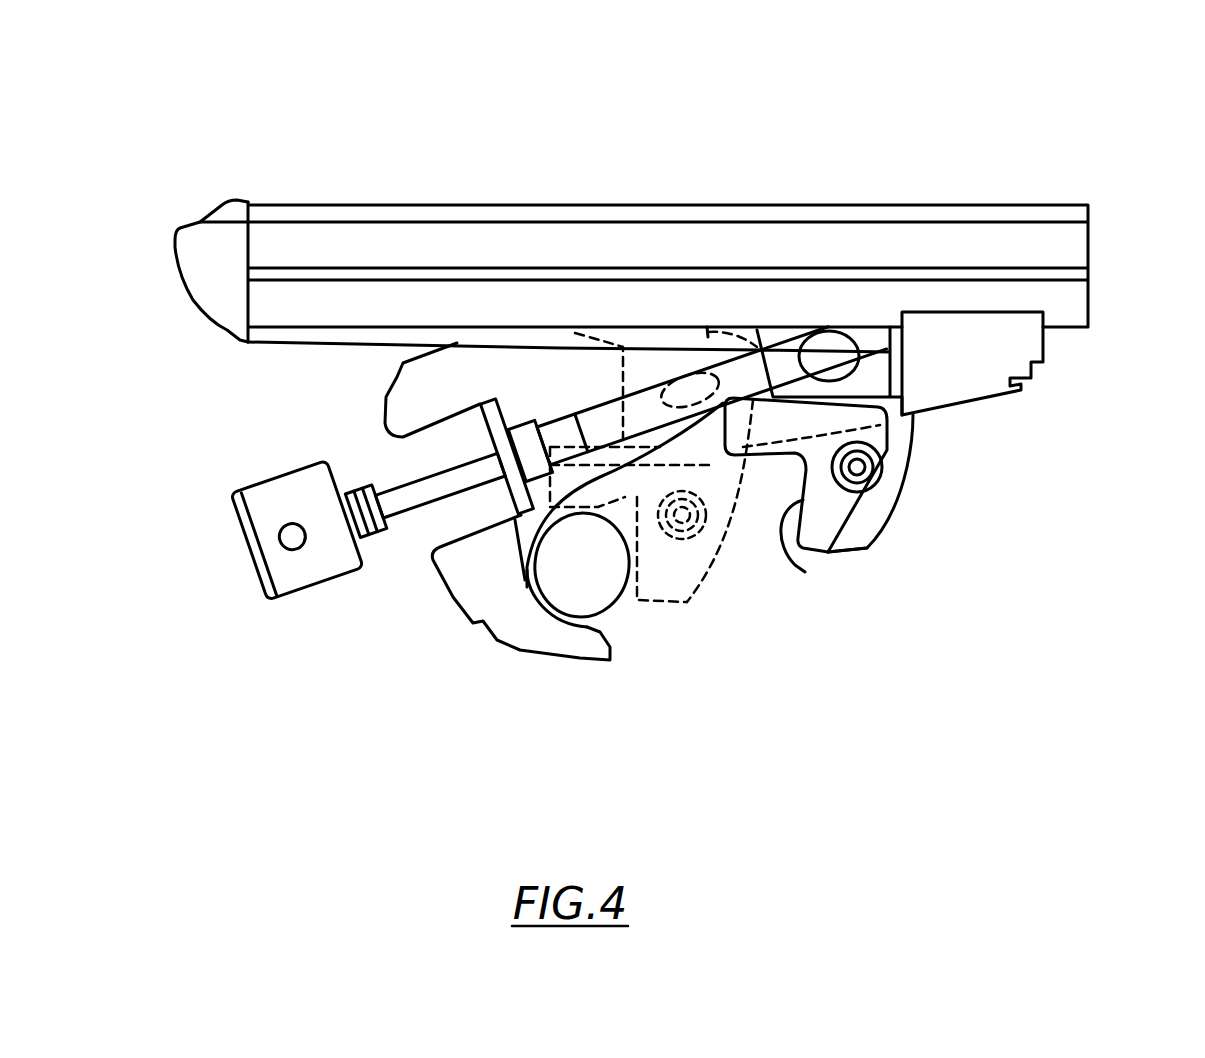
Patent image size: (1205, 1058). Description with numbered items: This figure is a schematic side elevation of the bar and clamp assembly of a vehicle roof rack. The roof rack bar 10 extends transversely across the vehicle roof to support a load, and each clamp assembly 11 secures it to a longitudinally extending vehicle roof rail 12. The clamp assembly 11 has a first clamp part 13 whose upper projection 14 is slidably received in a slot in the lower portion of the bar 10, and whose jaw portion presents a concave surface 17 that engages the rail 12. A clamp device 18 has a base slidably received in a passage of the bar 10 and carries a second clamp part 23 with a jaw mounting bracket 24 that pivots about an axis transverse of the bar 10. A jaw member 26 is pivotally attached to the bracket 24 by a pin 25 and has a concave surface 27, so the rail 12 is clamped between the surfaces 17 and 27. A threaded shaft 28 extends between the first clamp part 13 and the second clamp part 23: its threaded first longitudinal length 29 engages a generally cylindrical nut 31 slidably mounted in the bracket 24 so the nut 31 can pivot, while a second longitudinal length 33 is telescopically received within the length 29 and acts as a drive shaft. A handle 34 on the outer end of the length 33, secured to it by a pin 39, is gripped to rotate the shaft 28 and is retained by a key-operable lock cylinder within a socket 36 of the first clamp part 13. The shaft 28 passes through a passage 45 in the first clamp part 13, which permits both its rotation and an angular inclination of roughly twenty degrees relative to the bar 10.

The roof rack bar 10 is at (997, 205).
The clamp assembly 11 is at (960, 592).
The vehicle roof rail 12 is at (603, 617).
The first clamp part 13 is at (397, 387).
The upper projection 14 is at (508, 335).
The concave surface 17 is at (595, 648).
The clamp device 18 is at (907, 493).
The second clamp part 23 is at (753, 563).
The jaw mounting bracket 24 is at (602, 360).
The pin 25 is at (880, 467).
The jaw member 26 is at (880, 535).
The concave surface 27 is at (805, 572).
The threaded shaft 28 is at (655, 400).
The first longitudinal length 29 is at (583, 420).
The nut 31 is at (837, 340).
The second longitudinal length 33 is at (417, 498).
The handle 34 is at (263, 490).
The socket 36 is at (470, 465).
The pin 39 is at (292, 540).
The passage 45 is at (657, 405).